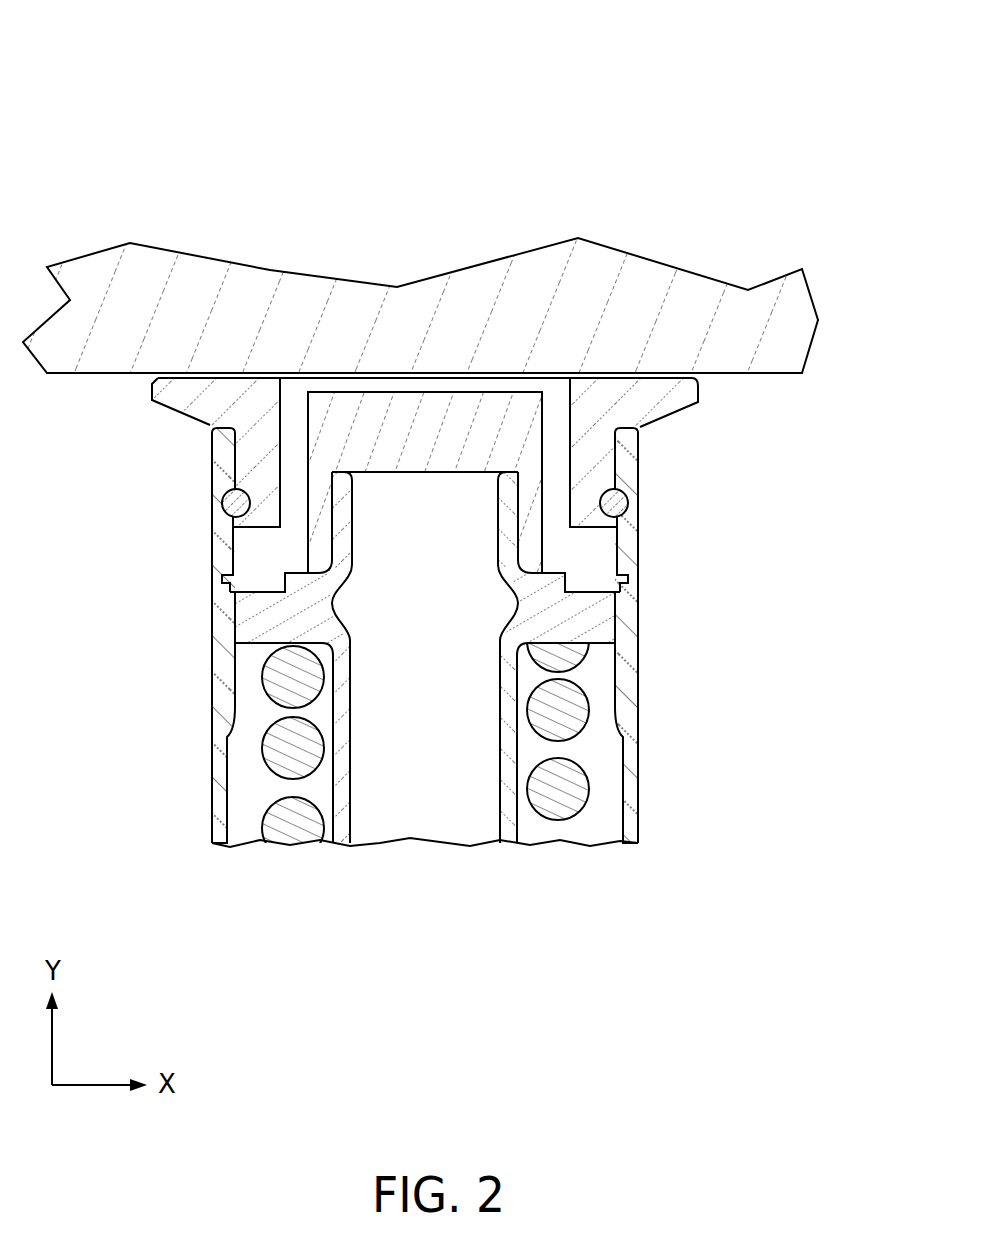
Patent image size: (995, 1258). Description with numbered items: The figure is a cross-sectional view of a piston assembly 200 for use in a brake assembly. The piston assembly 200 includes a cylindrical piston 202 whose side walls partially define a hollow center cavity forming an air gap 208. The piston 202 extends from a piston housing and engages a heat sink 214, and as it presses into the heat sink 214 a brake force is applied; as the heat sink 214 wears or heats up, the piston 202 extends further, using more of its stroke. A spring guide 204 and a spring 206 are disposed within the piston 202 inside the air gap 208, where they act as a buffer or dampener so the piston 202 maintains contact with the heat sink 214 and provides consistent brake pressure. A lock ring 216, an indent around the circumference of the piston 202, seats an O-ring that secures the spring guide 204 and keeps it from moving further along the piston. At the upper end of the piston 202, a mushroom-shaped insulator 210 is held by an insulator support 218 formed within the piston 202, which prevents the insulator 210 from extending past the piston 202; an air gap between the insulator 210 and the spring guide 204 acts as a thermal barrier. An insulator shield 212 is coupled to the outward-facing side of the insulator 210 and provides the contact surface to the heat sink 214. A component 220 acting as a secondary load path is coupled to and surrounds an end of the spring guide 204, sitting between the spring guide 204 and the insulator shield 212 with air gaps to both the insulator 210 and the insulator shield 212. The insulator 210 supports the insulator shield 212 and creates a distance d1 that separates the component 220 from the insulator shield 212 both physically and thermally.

The piston assembly 200 is at (89, 112).
The piston 202 is at (223, 687).
The spring guide 204 is at (335, 833).
The spring 206 is at (280, 837).
The air gap 208 is at (607, 833).
The insulator 210 is at (170, 405).
The insulator shield 212 is at (393, 364).
The heat sink 214 is at (782, 307).
The lock ring 216 is at (222, 585).
The insulator support 218 is at (223, 512).
The component 220 is at (481, 390).
The distance d1 is at (553, 338).